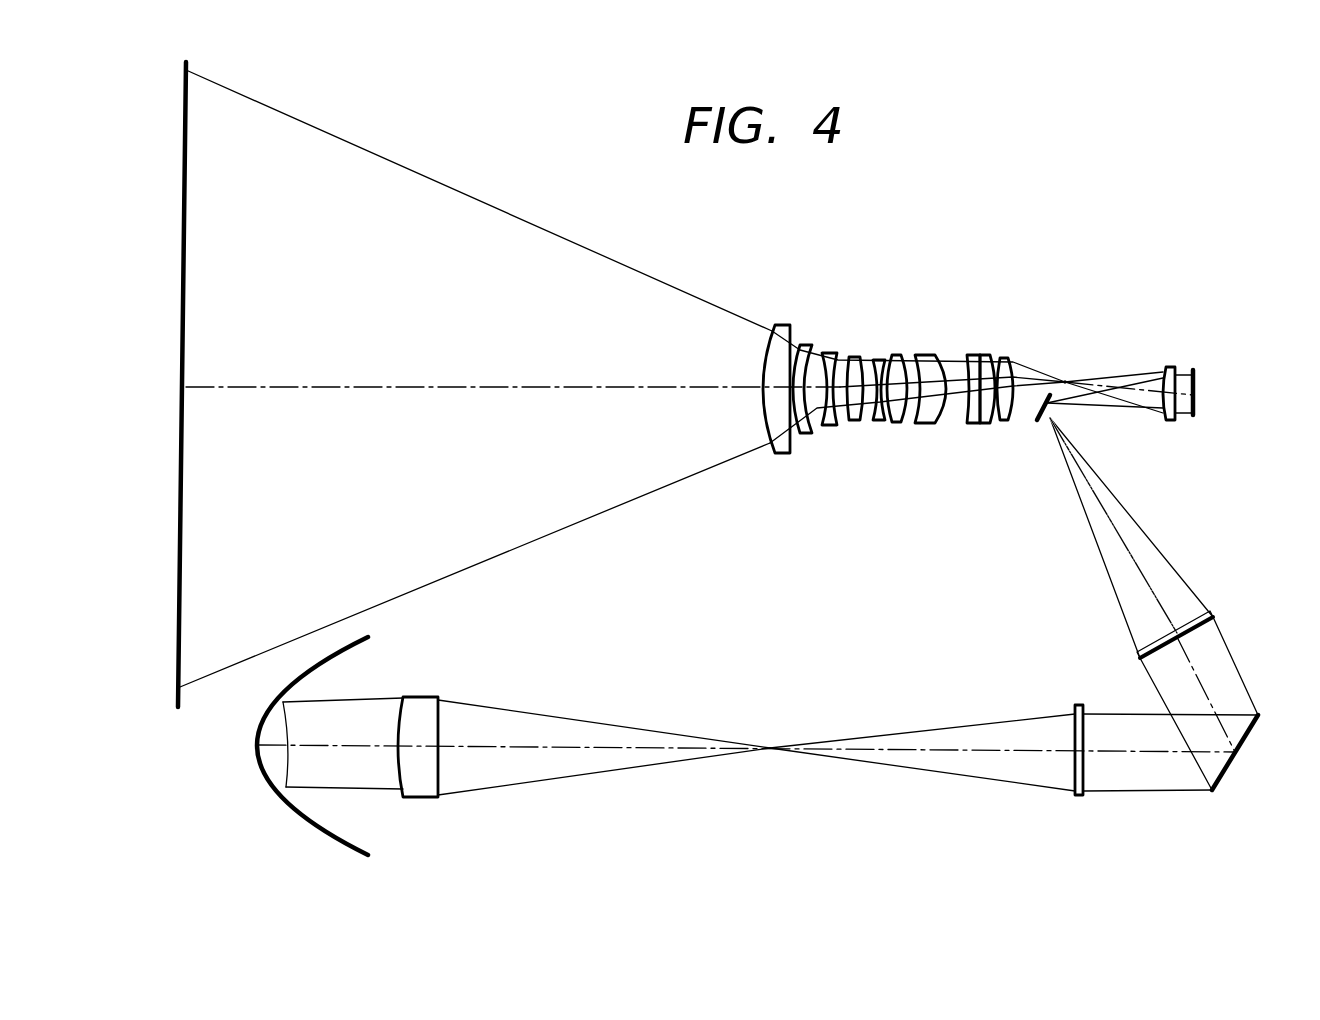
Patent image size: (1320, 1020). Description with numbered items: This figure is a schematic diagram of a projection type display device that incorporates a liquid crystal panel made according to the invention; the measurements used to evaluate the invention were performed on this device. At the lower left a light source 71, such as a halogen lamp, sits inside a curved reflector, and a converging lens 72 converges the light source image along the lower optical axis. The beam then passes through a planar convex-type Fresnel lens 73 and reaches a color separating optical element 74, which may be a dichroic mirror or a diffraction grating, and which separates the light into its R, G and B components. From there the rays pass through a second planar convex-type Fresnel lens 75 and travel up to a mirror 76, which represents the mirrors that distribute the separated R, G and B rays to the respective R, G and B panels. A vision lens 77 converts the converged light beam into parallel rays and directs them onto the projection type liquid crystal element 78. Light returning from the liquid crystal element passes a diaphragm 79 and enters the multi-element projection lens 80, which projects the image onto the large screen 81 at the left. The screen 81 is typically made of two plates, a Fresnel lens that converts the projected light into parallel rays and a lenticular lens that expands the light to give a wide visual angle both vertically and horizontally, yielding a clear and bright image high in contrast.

The light source 71 is at (348, 840).
The converging lens 72 is at (423, 695).
The planar convex-type Fresnel lens 73 is at (1080, 797).
The color separating optical element 74 is at (1226, 772).
The planar convex-type Fresnel lens 75 is at (1160, 645).
The mirror 76 is at (1035, 418).
The vision lens 77 is at (1168, 422).
The projection type liquid crystal element 78 is at (1194, 373).
The diaphragm 79 is at (1062, 374).
The projection lens 80 is at (875, 340).
The screen 81 is at (182, 313).